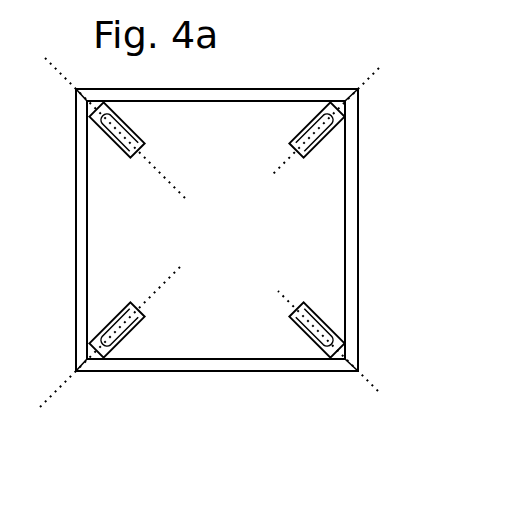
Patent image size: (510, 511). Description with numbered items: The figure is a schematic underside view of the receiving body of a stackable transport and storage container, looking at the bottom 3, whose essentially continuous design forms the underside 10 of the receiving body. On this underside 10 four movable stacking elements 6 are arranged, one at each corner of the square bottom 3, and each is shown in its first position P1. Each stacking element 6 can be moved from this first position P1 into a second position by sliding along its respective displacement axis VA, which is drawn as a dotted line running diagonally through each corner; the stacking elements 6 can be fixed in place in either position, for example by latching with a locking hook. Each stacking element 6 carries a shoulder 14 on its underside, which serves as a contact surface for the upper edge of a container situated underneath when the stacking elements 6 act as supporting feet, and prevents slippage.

The bottom 3 is at (302, 236).
The stacking elements 6 is at (307, 132).
The underside 10 is at (351, 188).
The shoulder 14 is at (97, 112).
The displacement axis VA is at (216, 239).
The first position P1 is at (305, 383).